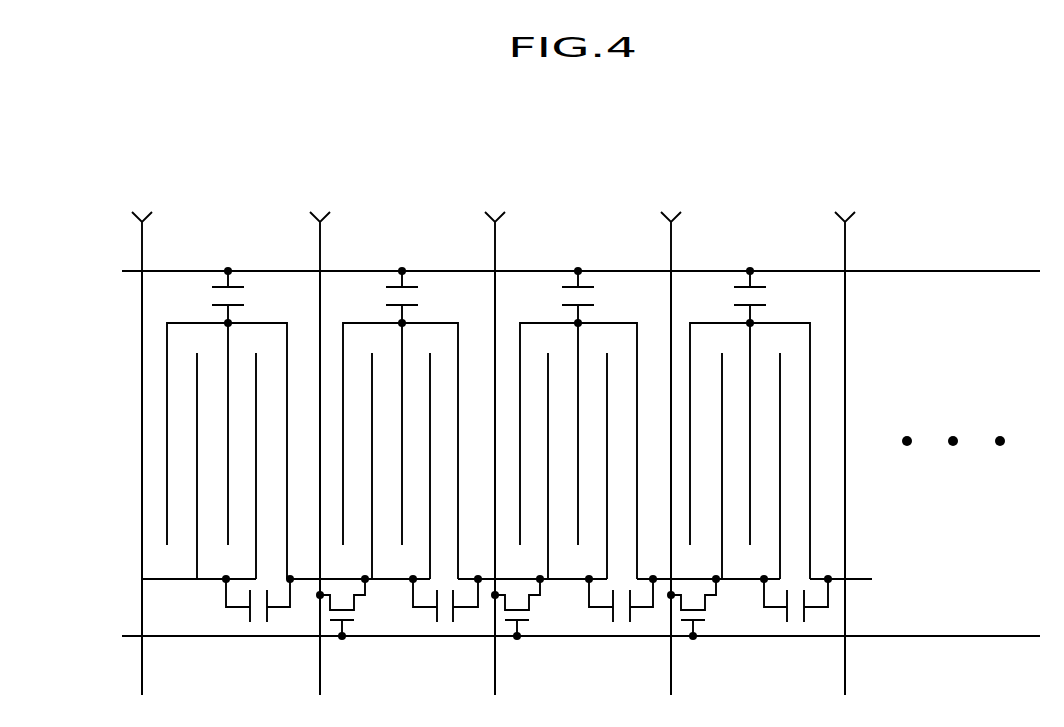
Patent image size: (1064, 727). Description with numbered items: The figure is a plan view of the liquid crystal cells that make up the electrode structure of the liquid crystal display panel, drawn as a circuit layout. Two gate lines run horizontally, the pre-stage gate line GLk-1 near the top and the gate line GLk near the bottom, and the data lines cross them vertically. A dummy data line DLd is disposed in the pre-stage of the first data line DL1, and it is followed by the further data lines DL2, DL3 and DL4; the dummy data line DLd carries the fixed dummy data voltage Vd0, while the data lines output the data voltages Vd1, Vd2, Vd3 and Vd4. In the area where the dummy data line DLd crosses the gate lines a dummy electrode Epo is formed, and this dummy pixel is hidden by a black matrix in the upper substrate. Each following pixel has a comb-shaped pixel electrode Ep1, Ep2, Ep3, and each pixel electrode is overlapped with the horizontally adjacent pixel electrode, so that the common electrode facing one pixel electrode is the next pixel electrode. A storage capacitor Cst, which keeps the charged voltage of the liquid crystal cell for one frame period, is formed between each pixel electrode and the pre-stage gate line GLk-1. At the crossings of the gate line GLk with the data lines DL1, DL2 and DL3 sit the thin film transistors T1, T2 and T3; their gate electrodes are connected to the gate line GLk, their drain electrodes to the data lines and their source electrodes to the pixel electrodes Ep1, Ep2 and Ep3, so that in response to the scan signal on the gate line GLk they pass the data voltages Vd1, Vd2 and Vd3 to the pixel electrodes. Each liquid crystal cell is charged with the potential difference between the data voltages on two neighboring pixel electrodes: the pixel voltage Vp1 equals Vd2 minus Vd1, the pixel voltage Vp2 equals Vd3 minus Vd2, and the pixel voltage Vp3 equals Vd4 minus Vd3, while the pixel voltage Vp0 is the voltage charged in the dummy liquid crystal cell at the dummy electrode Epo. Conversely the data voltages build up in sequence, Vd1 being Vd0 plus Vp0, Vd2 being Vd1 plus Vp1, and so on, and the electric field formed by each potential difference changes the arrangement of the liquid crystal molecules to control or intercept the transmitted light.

The pre-stage gate line GLk-1 is at (540, 271).
The gate line GLk is at (552, 636).
The dummy data voltage Vd0 is at (143, 438).
The first data voltage Vd1 is at (319, 438).
The second data voltage Vd2 is at (495, 438).
The third data voltage Vd3 is at (671, 438).
The fourth data voltage Vd4 is at (845, 438).
The dummy data line DLd is at (260, 263).
The first data line DL1 is at (346, 467).
The second data line DL2 is at (521, 467).
The third data line DL3 is at (697, 467).
The fourth data line DL4 is at (873, 467).
The storage capacitor Cst is at (466, 297).
The dummy electrode Epo is at (178, 579).
The first pixel electrode Ep1 is at (390, 580).
The second pixel electrode Ep2 is at (565, 580).
The third pixel electrode Ep3 is at (740, 580).
The dummy pixel voltage Vp0 is at (258, 617).
The first pixel voltage Vp1 is at (445, 617).
The second pixel voltage Vp2 is at (621, 617).
The third pixel voltage Vp3 is at (796, 617).
The first thin film transistor T1 is at (342, 621).
The second thin film transistor T2 is at (517, 621).
The third thin film transistor T3 is at (693, 621).